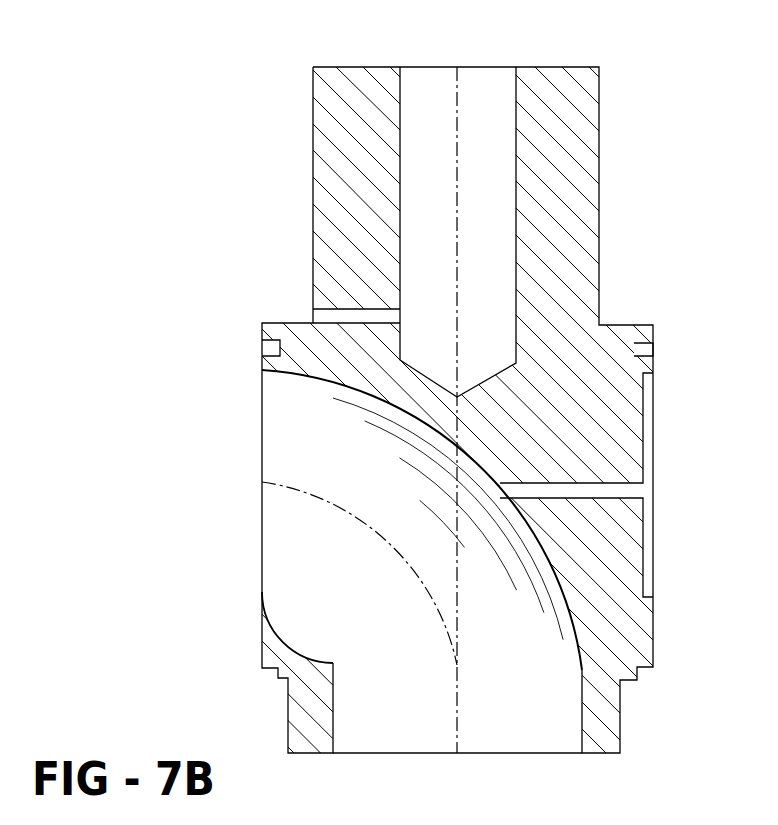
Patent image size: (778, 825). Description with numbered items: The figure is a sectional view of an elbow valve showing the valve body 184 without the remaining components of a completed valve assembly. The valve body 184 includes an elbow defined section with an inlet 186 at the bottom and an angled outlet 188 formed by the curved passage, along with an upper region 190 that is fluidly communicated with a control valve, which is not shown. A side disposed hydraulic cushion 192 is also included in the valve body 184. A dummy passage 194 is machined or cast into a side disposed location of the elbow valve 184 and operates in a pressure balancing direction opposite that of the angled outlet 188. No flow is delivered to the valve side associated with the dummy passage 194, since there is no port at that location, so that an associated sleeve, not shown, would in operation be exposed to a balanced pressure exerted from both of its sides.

The valve body 184 is at (603, 347).
The inlet 186 is at (523, 712).
The outlet 188 is at (342, 488).
The upper region 190 is at (422, 85).
The hydraulic cushion 192 is at (330, 318).
The dummy passage 194 is at (623, 492).